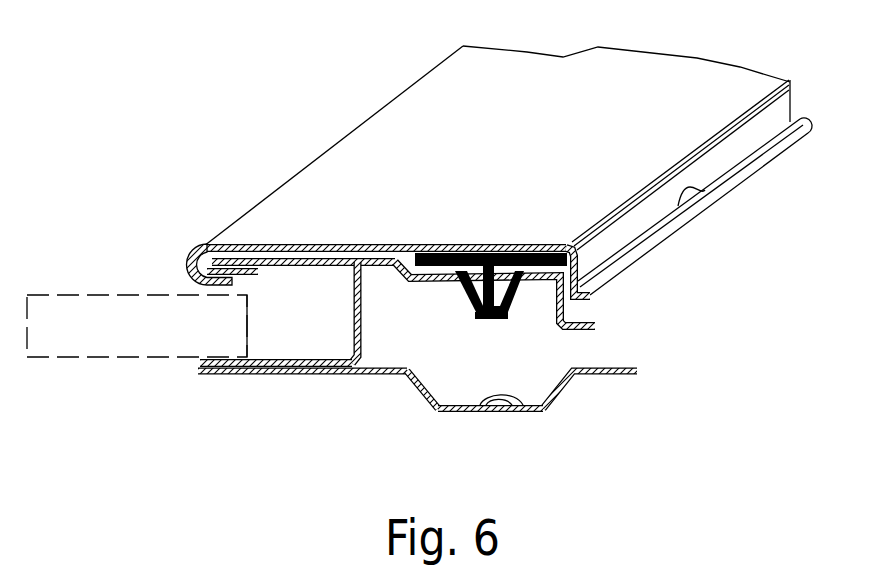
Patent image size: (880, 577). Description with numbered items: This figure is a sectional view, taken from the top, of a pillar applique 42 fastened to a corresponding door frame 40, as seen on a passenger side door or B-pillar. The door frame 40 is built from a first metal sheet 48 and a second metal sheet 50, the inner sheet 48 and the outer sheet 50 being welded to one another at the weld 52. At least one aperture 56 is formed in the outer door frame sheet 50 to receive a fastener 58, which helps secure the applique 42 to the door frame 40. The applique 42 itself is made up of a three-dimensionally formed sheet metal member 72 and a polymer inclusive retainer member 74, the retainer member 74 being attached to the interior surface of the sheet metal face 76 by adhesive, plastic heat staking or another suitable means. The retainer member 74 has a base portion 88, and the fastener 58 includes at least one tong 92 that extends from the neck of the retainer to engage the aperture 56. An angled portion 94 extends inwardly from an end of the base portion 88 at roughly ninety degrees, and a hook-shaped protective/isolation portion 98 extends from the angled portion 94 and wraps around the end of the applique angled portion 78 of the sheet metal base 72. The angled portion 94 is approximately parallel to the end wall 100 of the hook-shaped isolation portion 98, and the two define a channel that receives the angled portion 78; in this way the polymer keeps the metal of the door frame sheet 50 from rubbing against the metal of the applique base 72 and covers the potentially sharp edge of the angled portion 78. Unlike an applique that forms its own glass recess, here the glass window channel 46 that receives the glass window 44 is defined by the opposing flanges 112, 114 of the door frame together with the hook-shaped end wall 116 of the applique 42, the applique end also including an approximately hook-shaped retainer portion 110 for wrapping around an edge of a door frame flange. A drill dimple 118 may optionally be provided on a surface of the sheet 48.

The door frame 40 is at (417, 396).
The applique 42 is at (407, 128).
The glass window 44 is at (52, 312).
The glass window channel 46 is at (198, 357).
The first metal sheet 48 is at (333, 373).
The second metal sheet 50 is at (423, 300).
The weld 52 is at (228, 369).
The aperture 56 is at (483, 250).
The fastener 58 is at (507, 319).
The sheet metal member 72 is at (261, 243).
The polymer inclusive retainer member 74 is at (540, 268).
The sheet metal face 76 is at (433, 90).
The applique angled portion 78 is at (590, 258).
The base portion 88 is at (448, 242).
The tong 92 is at (466, 292).
The angled portion 94 is at (576, 236).
The hook-shaped protective/isolation portion 98 is at (584, 313).
The end wall 100 is at (713, 200).
The hook-shaped retainer portion 110 is at (197, 263).
The flange 112 is at (277, 376).
The flange 114 is at (325, 247).
The hook-shaped end wall 116 is at (193, 293).
The drill dimple 118 is at (523, 406).